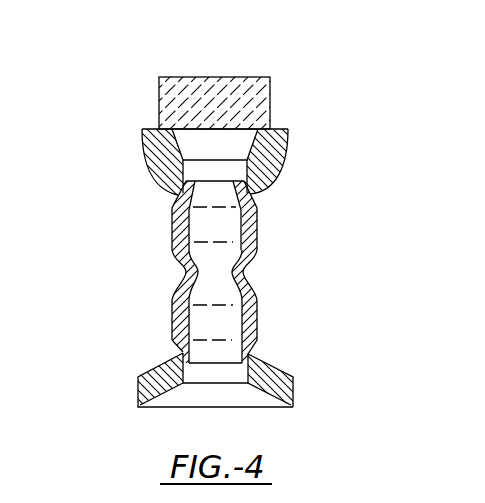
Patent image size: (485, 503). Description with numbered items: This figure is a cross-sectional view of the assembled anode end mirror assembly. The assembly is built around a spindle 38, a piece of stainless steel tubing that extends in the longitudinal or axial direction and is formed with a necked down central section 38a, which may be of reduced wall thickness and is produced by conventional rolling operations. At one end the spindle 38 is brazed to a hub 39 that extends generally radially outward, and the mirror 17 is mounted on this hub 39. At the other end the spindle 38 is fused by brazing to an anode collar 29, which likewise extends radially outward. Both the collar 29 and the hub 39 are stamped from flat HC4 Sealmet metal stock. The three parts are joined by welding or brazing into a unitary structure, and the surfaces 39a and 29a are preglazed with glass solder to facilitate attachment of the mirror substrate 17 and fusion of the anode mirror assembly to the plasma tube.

The mirror 17 is at (268, 77).
The hub 39 is at (142, 138).
The surface 39a is at (283, 130).
The spindle 38 is at (259, 229).
The necked down central section 38a is at (246, 276).
The anode collar 29 is at (138, 377).
The surface 29a is at (278, 407).